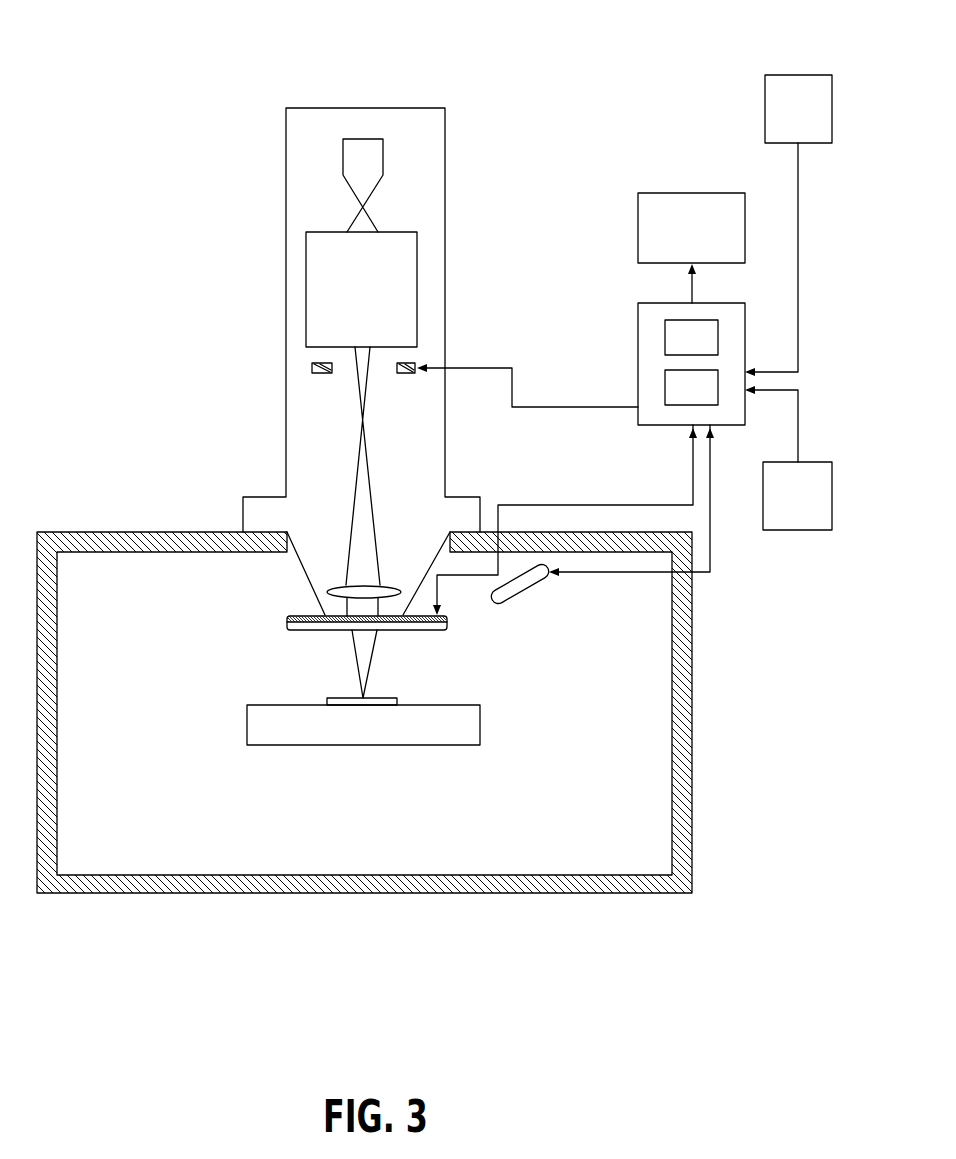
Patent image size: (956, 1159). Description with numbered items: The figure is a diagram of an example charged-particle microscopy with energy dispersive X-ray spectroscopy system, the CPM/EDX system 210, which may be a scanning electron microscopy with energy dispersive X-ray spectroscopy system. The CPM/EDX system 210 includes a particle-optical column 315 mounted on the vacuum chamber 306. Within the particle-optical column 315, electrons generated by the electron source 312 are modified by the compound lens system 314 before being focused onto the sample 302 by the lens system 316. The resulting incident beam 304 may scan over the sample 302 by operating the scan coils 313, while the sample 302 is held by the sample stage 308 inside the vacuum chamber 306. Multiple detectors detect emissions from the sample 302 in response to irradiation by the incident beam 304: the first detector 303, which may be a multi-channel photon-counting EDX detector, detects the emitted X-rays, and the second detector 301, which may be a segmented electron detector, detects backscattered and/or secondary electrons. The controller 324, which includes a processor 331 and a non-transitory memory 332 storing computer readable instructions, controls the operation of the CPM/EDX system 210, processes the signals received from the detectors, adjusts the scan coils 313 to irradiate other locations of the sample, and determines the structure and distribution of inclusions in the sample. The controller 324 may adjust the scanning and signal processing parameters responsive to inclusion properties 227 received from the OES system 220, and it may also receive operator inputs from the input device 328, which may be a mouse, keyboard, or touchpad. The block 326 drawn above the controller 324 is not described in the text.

The CPM/EDX system 210 is at (194, 46).
The OES system 220 is at (765, 80).
The inclusion properties 227 is at (795, 178).
The second detector 301 is at (447, 632).
The sample 302 is at (383, 697).
The first detector 303 is at (518, 596).
The incident beam 304 is at (362, 662).
The vacuum chamber 306 is at (172, 531).
The sample stage 308 is at (260, 727).
The electron source 312 is at (384, 150).
The scan coils 313 is at (416, 366).
The compound lens system 314 is at (417, 232).
The particle-optical column 315 is at (248, 268).
The lens system 316 is at (337, 598).
The controller 324 is at (638, 378).
The output device 326 is at (657, 220).
The input device 328 is at (815, 532).
The processor 331 is at (691, 337).
The non-transitory memory 332 is at (691, 387).